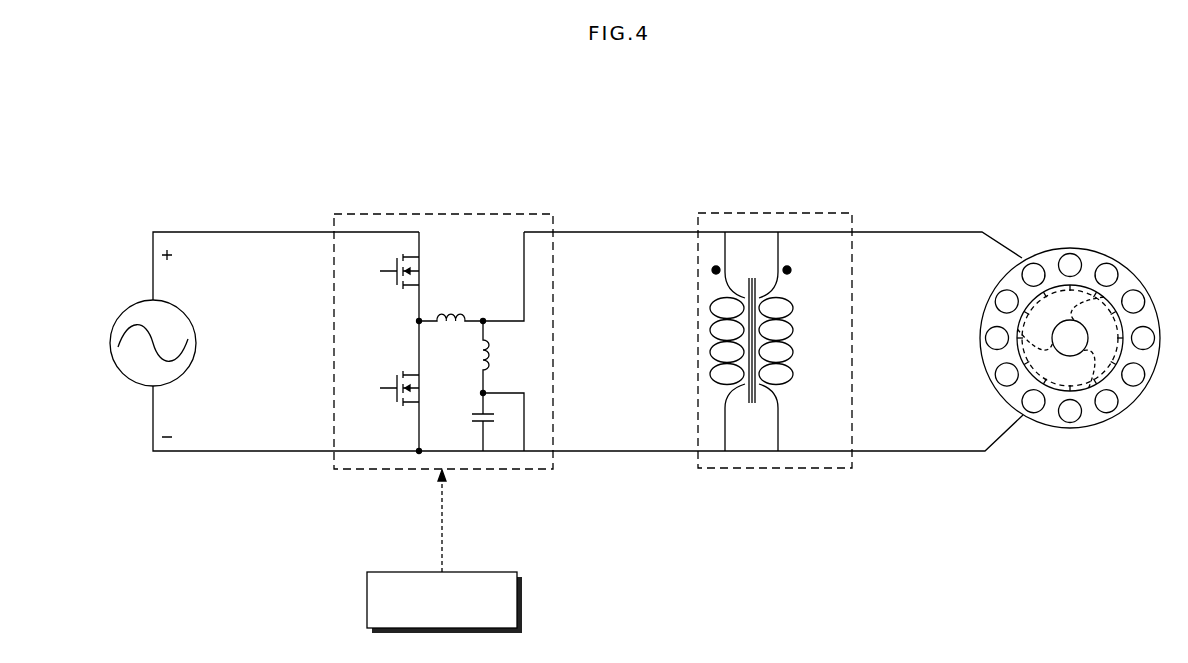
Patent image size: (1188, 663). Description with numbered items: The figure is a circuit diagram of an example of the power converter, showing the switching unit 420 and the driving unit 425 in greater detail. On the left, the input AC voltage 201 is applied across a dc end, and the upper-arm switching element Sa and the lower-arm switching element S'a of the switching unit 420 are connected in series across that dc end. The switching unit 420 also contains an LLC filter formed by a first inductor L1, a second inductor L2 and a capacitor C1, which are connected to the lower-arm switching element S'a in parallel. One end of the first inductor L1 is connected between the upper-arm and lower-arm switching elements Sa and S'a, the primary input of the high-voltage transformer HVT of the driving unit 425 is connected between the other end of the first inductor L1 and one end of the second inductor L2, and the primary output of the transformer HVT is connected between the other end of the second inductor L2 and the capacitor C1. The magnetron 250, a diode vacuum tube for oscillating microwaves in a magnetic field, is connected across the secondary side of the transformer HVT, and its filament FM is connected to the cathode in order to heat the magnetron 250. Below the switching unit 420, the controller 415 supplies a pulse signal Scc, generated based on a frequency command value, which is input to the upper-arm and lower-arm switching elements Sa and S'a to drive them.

The input AC voltage 201 is at (115, 322).
The switching unit 420 is at (443, 312).
The driving unit 425 is at (775, 311).
The controller 415 is at (452, 551).
The magnetron 250 is at (1074, 346).
The upper-arm switching element Sa is at (385, 271).
The lower-arm switching element S'a is at (382, 388).
The first inductor L1 is at (451, 307).
The second inductor L2 is at (498, 357).
The capacitor C1 is at (495, 422).
The high-voltage transformer HVT is at (772, 341).
The filament FM is at (1082, 430).
The pulse signal Scc is at (458, 521).